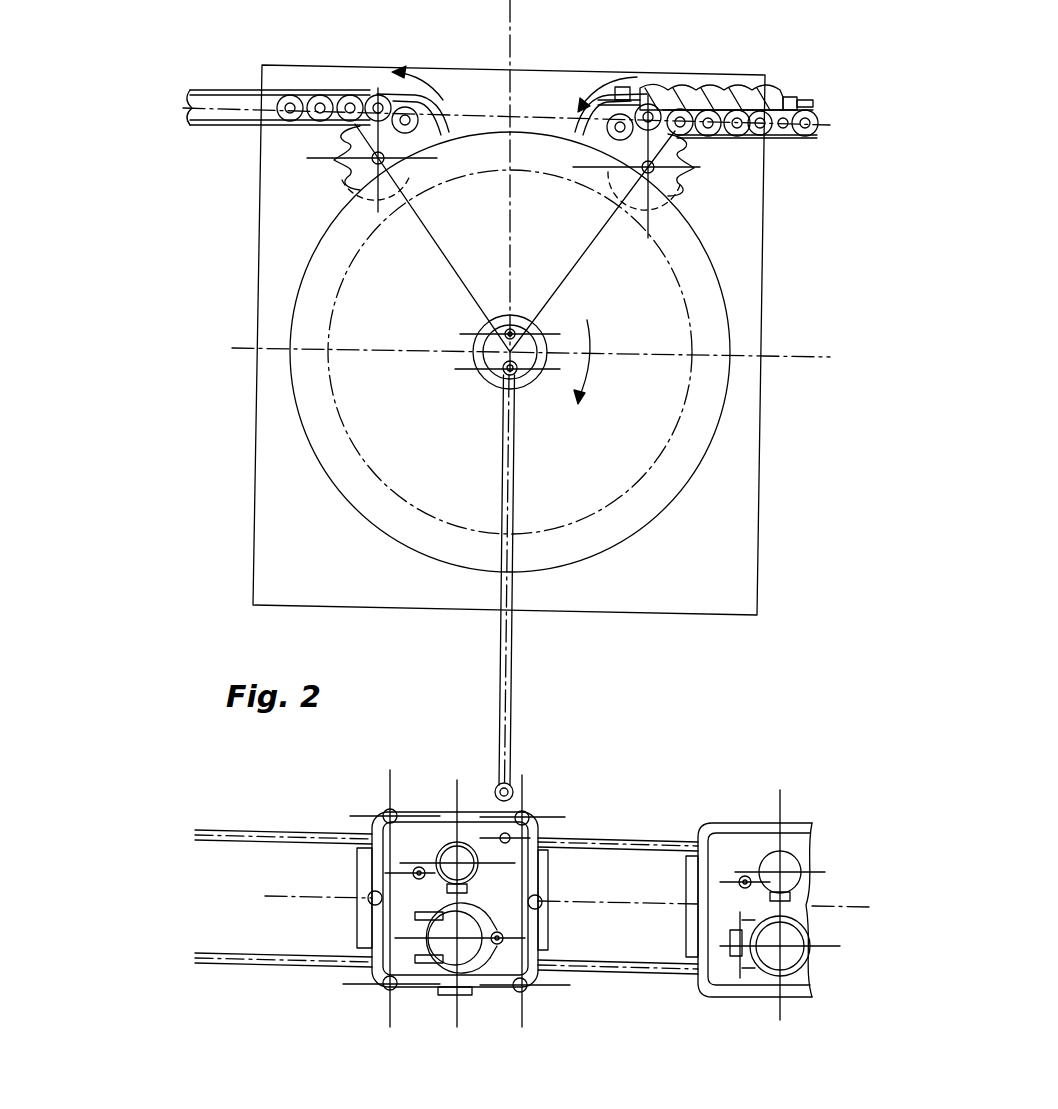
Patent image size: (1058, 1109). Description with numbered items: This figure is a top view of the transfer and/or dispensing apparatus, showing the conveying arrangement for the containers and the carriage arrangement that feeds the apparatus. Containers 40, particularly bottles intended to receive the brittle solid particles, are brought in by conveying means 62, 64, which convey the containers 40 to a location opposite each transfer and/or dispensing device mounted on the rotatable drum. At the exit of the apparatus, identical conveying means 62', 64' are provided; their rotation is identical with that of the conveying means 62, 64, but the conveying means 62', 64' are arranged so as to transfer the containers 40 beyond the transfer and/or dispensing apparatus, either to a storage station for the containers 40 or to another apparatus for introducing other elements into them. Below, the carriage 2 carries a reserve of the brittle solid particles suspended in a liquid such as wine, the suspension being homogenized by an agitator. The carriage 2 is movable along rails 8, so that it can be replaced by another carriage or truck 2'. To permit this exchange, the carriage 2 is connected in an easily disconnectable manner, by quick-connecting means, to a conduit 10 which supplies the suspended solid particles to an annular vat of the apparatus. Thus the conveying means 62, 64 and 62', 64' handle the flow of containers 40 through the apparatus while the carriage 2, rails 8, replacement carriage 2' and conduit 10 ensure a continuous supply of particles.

The carriage 2 is at (456, 881).
The another carriage or truck 2' is at (763, 880).
The rails 8 is at (607, 840).
The conduit 10 is at (505, 752).
The containers 40 is at (646, 118).
The conveying means 62 is at (701, 166).
The conveying means 62' is at (318, 107).
The conveying means 64 is at (709, 186).
The conveying means 64' is at (315, 173).